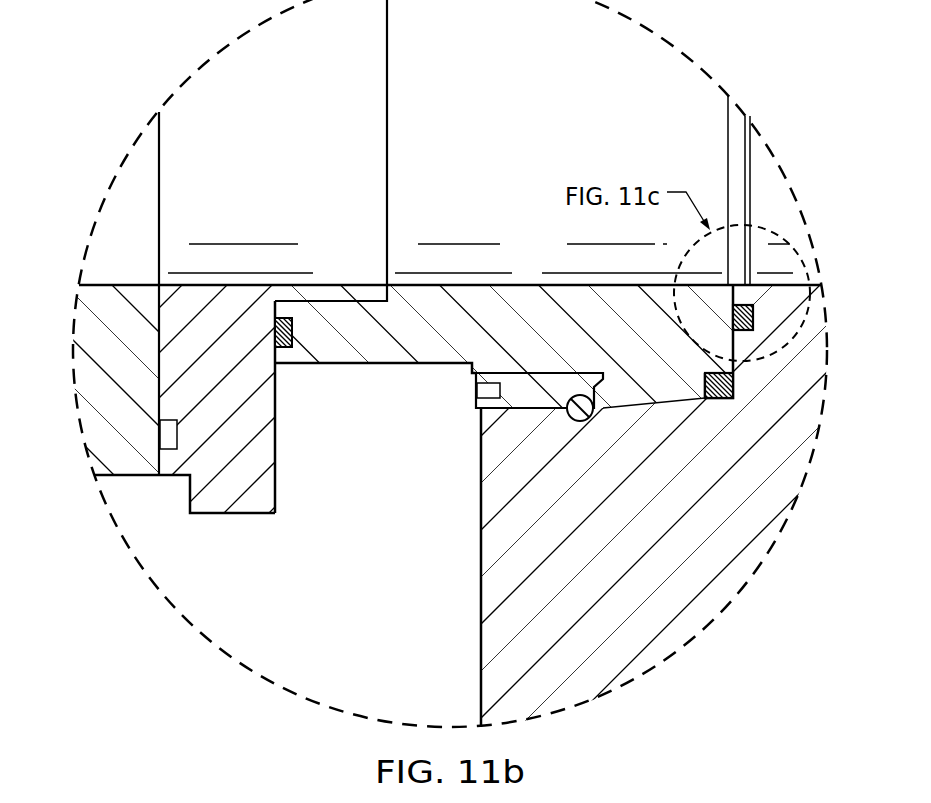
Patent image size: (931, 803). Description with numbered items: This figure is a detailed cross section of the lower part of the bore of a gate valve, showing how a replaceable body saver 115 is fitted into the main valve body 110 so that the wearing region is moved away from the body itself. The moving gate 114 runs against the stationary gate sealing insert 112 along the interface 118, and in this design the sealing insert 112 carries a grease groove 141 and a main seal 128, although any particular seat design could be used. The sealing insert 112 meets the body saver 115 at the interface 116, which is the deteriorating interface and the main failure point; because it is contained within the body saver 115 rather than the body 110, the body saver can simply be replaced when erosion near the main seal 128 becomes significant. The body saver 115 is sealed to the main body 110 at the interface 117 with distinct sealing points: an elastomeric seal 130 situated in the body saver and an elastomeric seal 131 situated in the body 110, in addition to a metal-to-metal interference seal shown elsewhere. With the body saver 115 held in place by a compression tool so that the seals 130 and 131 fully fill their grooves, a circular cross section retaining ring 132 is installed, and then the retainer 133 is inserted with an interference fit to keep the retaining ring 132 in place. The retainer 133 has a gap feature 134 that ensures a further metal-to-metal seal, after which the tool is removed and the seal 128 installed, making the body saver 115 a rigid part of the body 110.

The valve body 110 is at (713, 603).
The gate sealing insert 112 is at (266, 412).
The gate 114 is at (88, 428).
The body saver 115 is at (522, 294).
The interface 116 is at (388, 294).
The interface 117 is at (740, 344).
The interface 118 is at (159, 365).
The main seal 128 is at (291, 336).
The seal 130 is at (718, 400).
The seal 131 is at (753, 318).
The retaining ring 132 is at (579, 421).
The retainer 133 is at (520, 400).
The gap feature 134 is at (476, 390).
The grease groove 141 is at (178, 441).